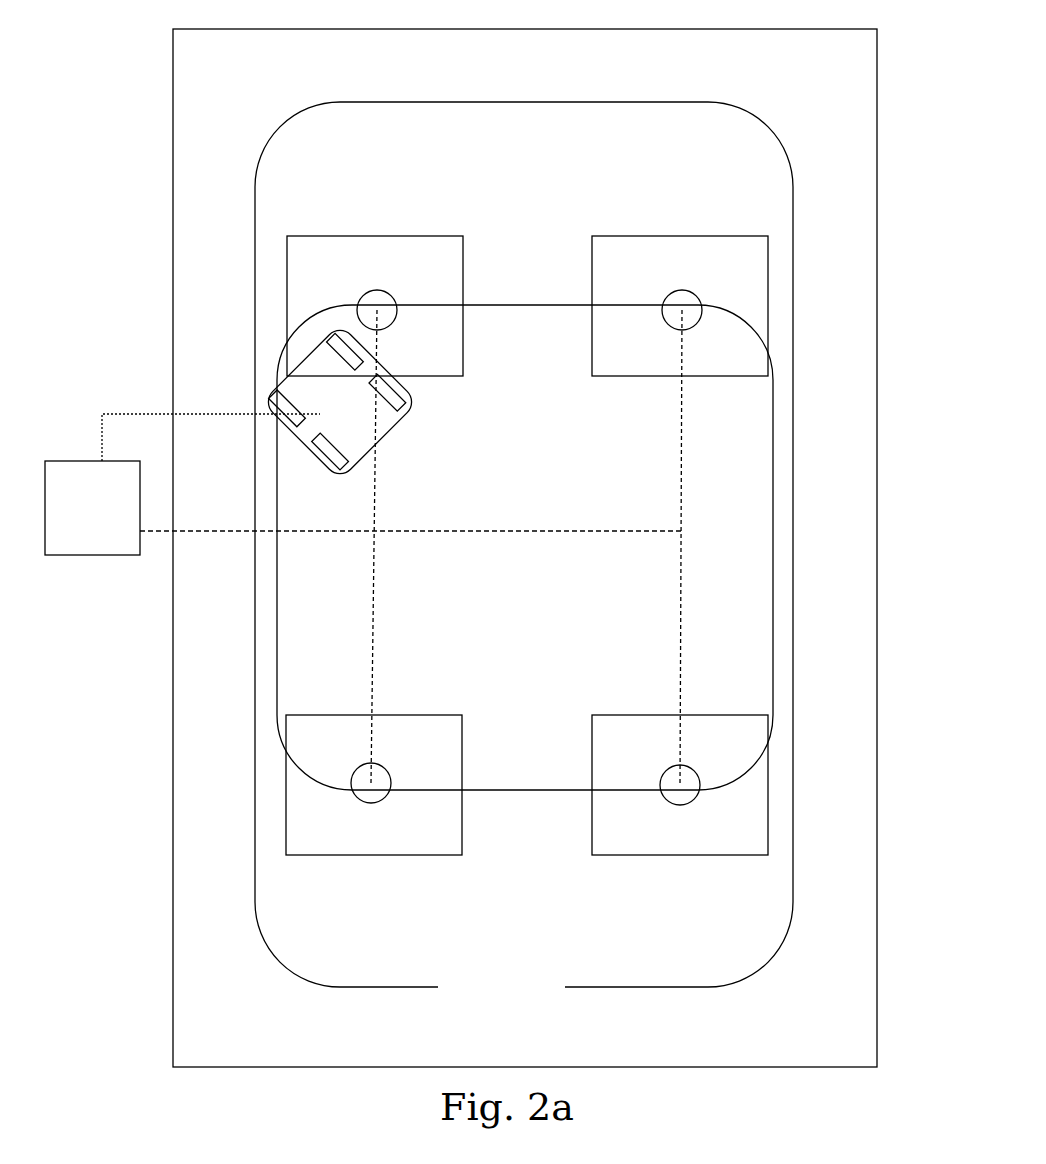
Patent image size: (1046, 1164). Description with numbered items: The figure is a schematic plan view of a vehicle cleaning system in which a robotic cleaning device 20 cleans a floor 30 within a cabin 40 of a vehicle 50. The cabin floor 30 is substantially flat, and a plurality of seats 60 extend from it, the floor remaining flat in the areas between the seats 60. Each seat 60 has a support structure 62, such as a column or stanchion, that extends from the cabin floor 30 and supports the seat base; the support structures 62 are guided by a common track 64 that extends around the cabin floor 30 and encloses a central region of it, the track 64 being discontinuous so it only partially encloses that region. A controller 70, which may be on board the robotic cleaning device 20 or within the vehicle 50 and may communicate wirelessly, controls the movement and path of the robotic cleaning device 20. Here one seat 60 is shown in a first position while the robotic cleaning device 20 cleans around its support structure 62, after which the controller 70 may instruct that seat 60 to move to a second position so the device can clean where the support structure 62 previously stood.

The robotic cleaning device 20 is at (385, 427).
The floor 30 is at (615, 547).
The cabin 40 is at (615, 547).
The vehicle 50 is at (837, 229).
The seats 60 is at (378, 258).
The support structure 62 is at (378, 297).
The track 64 is at (775, 588).
The controller 70 is at (113, 540).